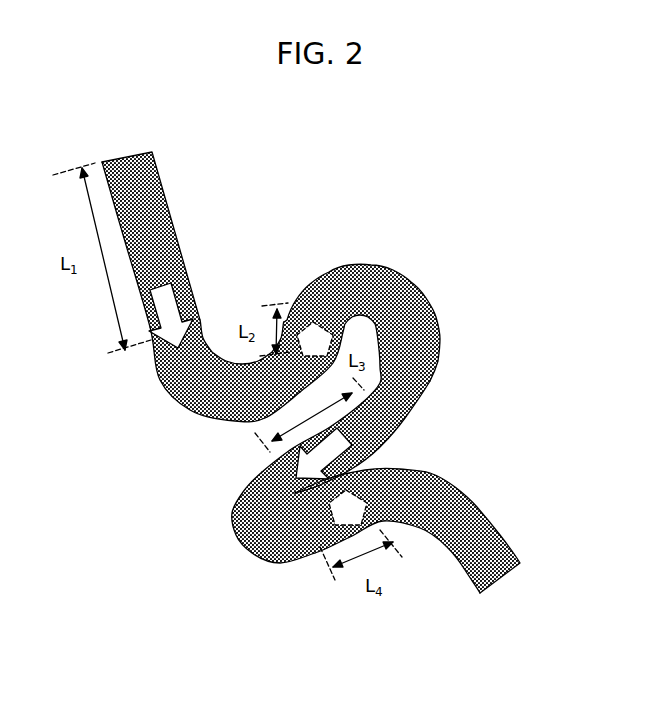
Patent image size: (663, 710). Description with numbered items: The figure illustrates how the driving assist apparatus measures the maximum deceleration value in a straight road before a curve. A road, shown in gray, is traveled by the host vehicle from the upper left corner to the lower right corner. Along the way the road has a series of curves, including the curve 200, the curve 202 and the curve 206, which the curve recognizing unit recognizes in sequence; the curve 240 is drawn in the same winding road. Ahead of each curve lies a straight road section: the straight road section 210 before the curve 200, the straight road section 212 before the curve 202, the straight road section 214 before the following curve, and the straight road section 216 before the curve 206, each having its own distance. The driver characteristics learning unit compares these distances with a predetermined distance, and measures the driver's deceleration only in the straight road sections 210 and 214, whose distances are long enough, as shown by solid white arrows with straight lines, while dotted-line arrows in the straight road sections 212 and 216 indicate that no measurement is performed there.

The curve 200 is at (202, 397).
The curve 202 is at (368, 282).
The curve 206 is at (415, 481).
The straight road section before the curve 210 is at (165, 218).
The straight road section before the curve 212 is at (303, 318).
The straight road section before the curve 214 is at (417, 413).
The straight road section before the curve 216 is at (312, 565).
The second bend portion 240 is at (240, 532).